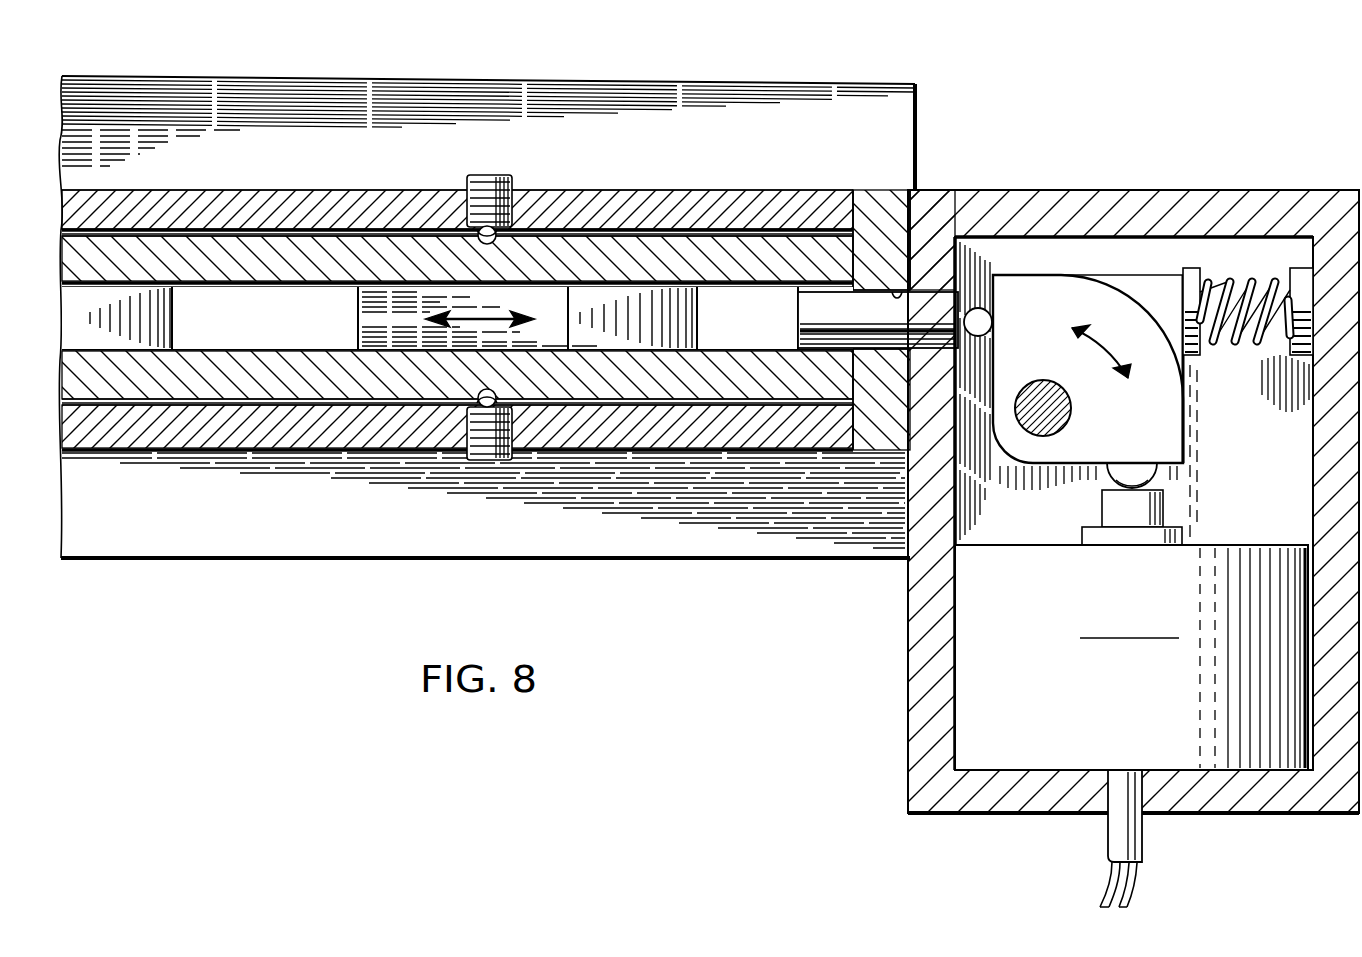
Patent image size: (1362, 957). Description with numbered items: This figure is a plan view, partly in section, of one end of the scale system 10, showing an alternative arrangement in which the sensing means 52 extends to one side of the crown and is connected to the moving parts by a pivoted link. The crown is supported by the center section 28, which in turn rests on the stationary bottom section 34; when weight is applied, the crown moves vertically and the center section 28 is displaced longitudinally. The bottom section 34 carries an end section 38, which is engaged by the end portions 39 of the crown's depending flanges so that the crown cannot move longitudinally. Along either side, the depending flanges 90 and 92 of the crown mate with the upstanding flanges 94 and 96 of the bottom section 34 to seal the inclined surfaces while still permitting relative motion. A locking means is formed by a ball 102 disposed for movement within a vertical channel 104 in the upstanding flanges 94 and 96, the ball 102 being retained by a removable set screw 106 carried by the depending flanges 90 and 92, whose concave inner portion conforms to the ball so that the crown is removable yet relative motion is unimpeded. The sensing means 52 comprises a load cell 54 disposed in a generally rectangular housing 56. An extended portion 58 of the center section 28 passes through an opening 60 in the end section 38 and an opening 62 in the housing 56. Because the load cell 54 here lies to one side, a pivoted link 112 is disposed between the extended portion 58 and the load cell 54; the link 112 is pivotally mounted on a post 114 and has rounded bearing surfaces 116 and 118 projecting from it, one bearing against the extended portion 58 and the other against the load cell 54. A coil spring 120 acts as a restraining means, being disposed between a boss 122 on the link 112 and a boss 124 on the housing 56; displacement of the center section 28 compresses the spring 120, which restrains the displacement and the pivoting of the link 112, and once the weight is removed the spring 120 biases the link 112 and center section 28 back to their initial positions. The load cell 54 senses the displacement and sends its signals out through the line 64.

The scale system 10 is at (528, 72).
The center section 28 is at (236, 331).
The bottom section 34 is at (250, 90).
The end section 38 is at (898, 208).
The end portions 39 is at (868, 210).
The sensing means 52 is at (985, 641).
The load cell 54 is at (1140, 698).
The housing 56 is at (926, 728).
The extended portion 58 is at (920, 316).
The opening 60 is at (900, 292).
The opening 62 is at (966, 298).
The line 64 is at (1122, 836).
The depending flange 90 is at (205, 192).
The depending flange 92 is at (178, 446).
The upstanding flange 94 is at (316, 243).
The upstanding flange 96 is at (273, 390).
The ball 102 is at (478, 238).
The vertical channel 104 is at (498, 240).
The set screw 106 is at (495, 175).
The pivoted link 112 is at (1165, 425).
The post 114 is at (1030, 425).
The rounded bearing surface 116 is at (992, 322).
The rounded bearing surface 118 is at (1160, 478).
The coil spring 120 is at (1216, 342).
The boss 122 is at (1190, 268).
The boss 124 is at (1303, 272).